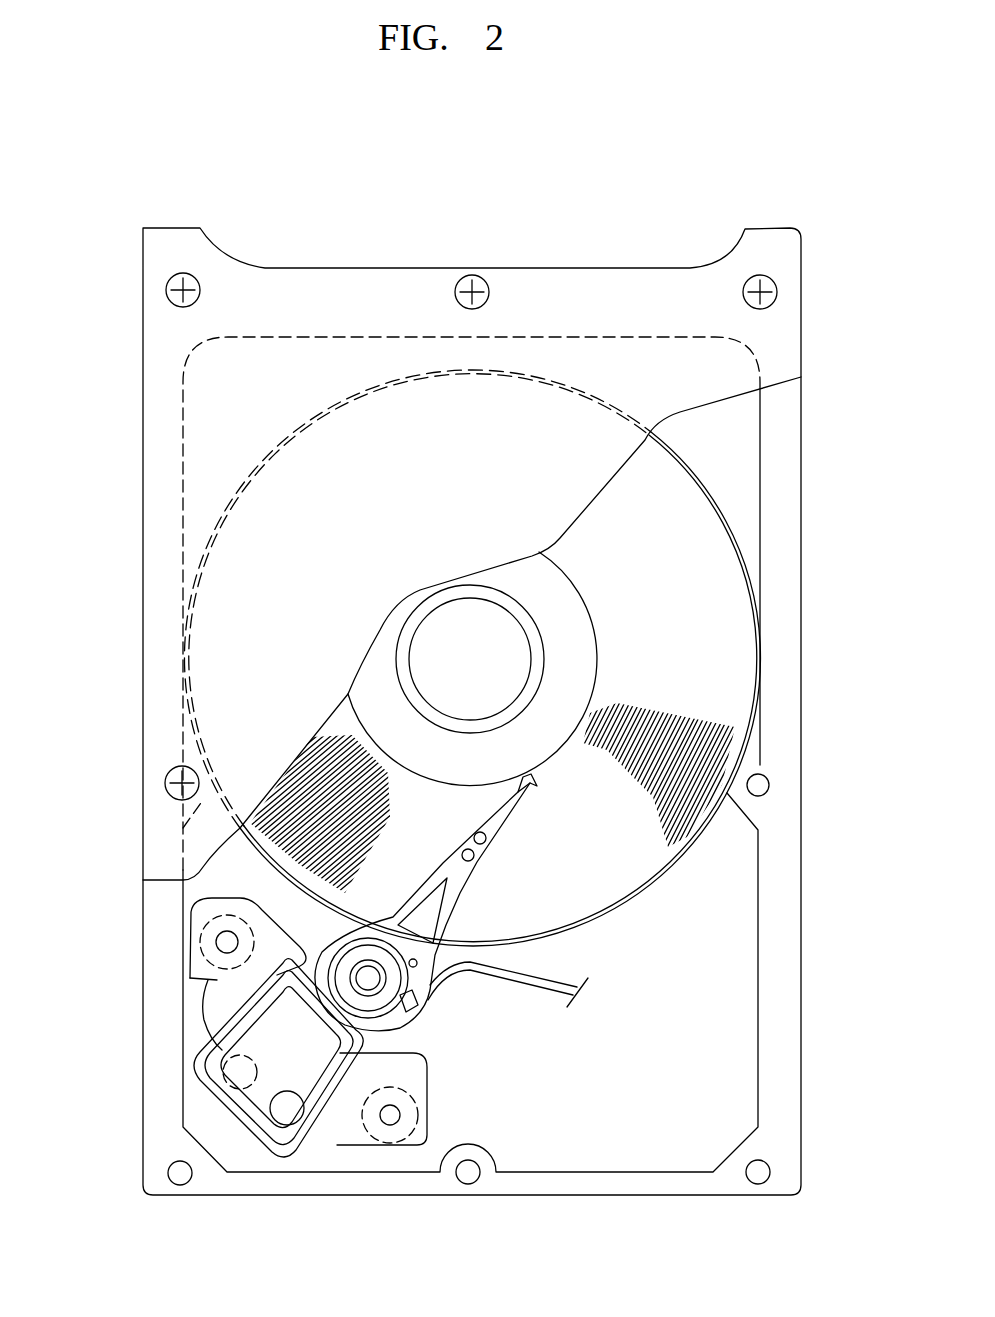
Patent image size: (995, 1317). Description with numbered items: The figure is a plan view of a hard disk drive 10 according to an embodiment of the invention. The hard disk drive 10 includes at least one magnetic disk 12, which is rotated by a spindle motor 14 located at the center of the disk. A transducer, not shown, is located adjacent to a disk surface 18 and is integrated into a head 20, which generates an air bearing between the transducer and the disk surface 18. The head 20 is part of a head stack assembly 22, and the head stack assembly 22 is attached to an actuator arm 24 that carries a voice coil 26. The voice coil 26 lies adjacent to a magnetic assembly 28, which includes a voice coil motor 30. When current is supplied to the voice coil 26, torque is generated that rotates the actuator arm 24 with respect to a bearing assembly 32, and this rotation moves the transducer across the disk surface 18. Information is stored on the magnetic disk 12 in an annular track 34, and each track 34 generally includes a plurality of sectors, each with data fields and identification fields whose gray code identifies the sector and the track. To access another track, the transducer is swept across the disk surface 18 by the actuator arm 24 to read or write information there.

The hard disk drive 10 is at (670, 212).
The magnetic disk 12 is at (717, 597).
The spindle motor 14 is at (448, 637).
The disk surface 18 is at (671, 666).
The head 20 is at (533, 803).
The head stack assembly 22 is at (471, 882).
The actuator arm 24 is at (283, 997).
The voice coil 26 is at (230, 1063).
The magnetic assembly 28 is at (223, 1008).
The voice coil motor 30 is at (327, 1137).
The bearing assembly 32 is at (383, 990).
The annular track 34 is at (308, 805).